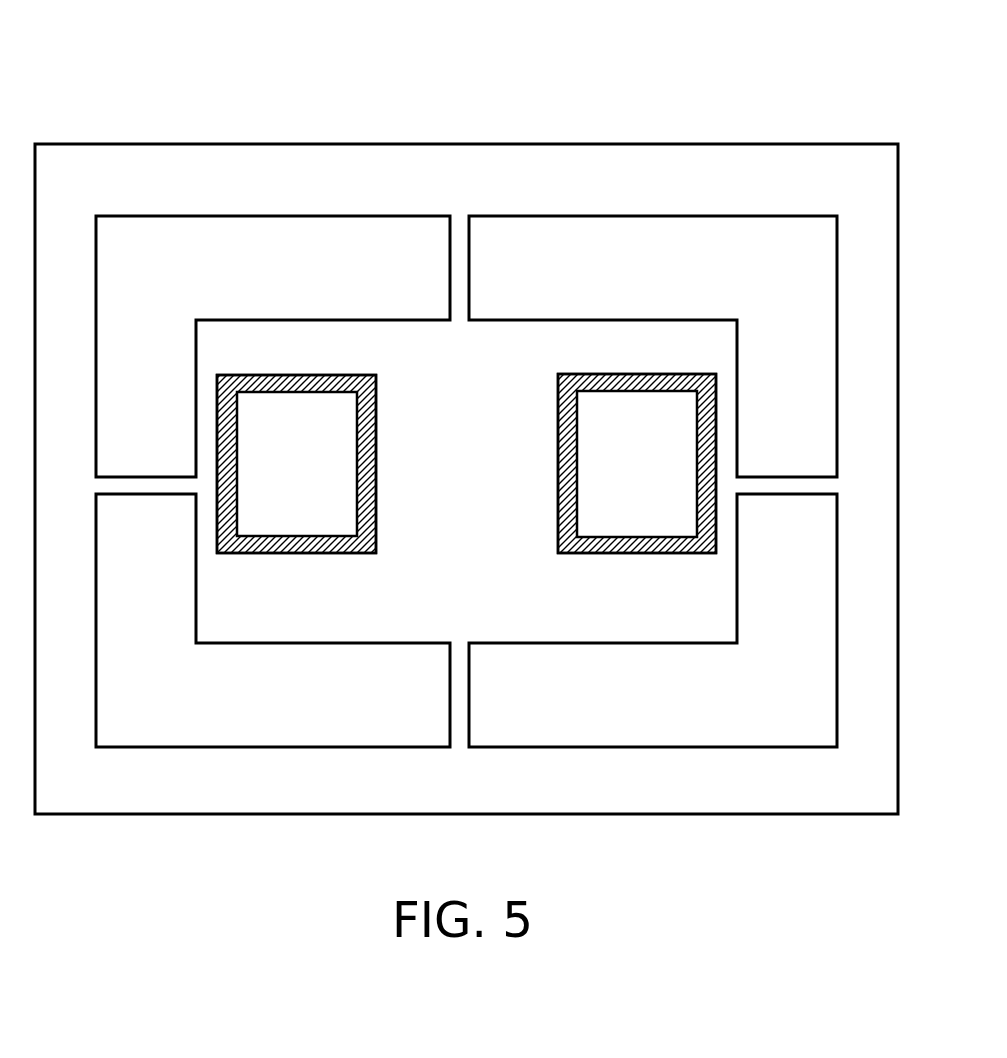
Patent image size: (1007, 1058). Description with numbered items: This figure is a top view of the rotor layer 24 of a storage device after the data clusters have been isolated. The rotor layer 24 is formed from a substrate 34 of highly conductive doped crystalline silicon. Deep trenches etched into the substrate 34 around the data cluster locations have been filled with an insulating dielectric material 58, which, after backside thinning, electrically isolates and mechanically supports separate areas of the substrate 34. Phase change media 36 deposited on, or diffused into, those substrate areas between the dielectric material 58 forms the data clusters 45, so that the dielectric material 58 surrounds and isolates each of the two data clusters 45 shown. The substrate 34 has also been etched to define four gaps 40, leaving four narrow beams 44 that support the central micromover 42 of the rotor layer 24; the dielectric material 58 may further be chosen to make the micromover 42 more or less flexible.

The rotor layer 24 is at (910, 88).
The substrate 34 is at (875, 733).
The gaps 40 is at (288, 279).
The beams 44 is at (459, 283).
The micromover 42 is at (478, 488).
The phase change media 36 is at (332, 469).
The data clusters 45 is at (467, 464).
The dielectric material 58 is at (376, 430).